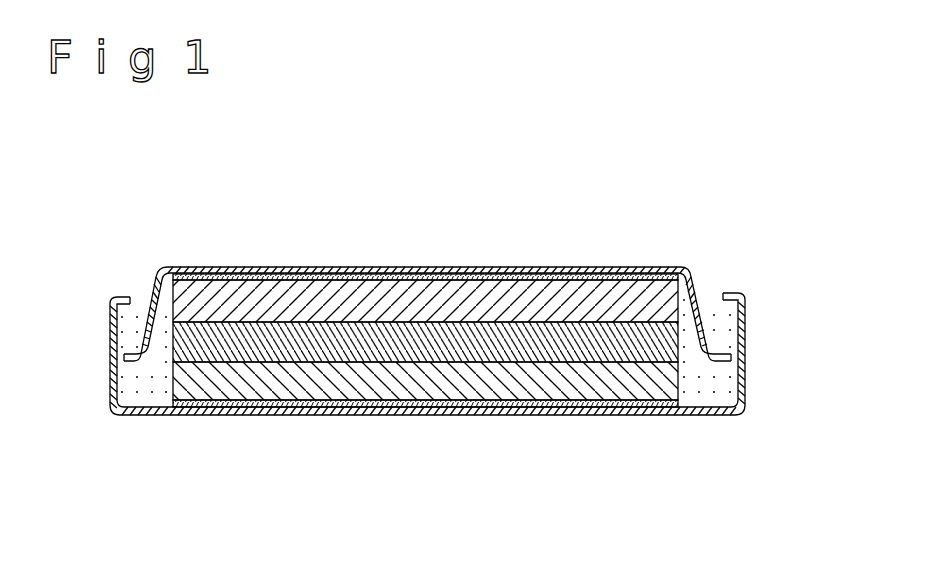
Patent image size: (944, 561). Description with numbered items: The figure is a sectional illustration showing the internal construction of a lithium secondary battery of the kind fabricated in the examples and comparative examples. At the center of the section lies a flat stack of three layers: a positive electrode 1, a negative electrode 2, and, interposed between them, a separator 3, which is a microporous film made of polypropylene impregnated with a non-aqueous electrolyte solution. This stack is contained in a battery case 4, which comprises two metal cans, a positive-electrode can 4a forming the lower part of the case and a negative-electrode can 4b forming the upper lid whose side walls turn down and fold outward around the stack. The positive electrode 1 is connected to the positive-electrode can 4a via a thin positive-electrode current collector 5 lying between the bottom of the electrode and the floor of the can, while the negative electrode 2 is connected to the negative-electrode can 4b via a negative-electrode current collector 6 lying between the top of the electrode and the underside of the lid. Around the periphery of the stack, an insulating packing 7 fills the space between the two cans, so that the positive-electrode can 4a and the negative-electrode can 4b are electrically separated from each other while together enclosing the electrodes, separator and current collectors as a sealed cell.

The positive electrode 1 is at (612, 383).
The negative electrode 2 is at (598, 290).
The separator 3 is at (637, 318).
The battery case 4 is at (489, 339).
The positive-electrode can 4a is at (744, 346).
The negative-electrode can 4b is at (696, 272).
The positive-electrode current collector 5 is at (421, 398).
The negative-electrode current collector 6 is at (407, 286).
The insulating packing 7 is at (152, 387).